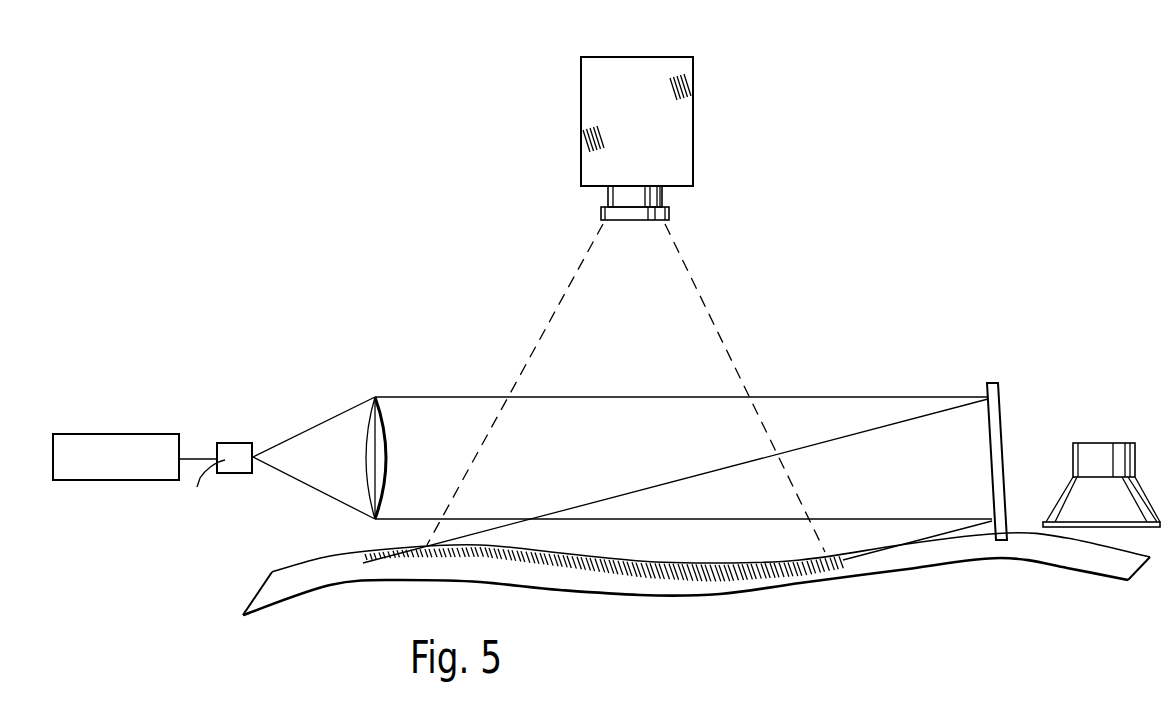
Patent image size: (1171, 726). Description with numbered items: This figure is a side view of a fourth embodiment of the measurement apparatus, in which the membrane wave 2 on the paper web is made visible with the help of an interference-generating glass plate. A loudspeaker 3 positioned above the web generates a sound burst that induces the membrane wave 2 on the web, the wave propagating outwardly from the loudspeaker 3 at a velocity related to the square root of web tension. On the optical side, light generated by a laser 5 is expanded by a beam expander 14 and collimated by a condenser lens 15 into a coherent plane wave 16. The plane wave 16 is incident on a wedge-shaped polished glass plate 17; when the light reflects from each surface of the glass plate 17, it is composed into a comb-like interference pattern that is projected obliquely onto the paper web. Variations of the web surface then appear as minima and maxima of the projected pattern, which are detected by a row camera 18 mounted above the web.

The membrane wave 2 is at (998, 553).
The loudspeaker 3 is at (1093, 448).
The laser 5 is at (130, 470).
The beam expander 14 is at (243, 447).
The condenser lens 15 is at (373, 392).
The coherent plane wave 16 is at (432, 447).
The wedge-shaped polished glass plate 17 is at (990, 383).
The row camera 18 is at (648, 137).